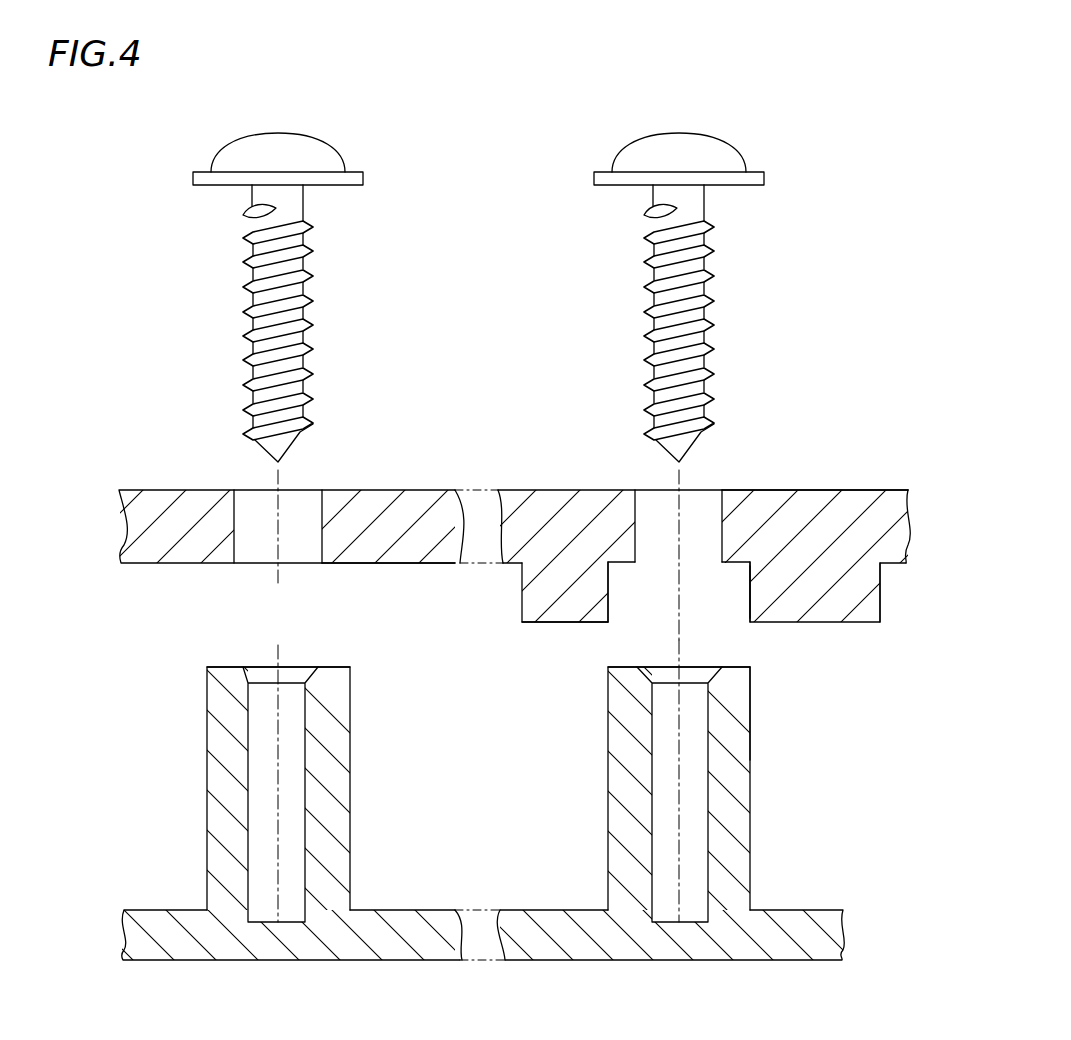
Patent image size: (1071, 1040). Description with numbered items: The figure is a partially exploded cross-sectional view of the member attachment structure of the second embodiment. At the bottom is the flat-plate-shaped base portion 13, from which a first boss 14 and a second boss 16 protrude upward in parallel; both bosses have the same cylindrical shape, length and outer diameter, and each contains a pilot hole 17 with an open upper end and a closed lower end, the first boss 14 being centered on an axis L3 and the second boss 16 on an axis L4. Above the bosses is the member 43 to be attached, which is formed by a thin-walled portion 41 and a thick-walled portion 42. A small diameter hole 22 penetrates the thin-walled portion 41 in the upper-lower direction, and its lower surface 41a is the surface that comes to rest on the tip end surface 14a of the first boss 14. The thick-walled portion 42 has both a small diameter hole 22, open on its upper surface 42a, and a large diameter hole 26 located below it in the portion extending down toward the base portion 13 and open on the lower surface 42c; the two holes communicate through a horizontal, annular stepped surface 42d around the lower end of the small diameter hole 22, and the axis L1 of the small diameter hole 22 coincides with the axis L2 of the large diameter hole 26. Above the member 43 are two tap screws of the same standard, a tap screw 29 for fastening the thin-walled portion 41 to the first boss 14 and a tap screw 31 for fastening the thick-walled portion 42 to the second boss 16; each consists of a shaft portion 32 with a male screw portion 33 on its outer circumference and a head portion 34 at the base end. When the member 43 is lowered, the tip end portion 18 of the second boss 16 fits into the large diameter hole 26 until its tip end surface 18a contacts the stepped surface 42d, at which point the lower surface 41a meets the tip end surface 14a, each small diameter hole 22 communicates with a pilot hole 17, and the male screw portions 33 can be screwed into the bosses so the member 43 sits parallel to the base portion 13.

The base portion 13 is at (513, 963).
The first boss 14 is at (210, 780).
The tip end surface of the first boss 14a is at (207, 667).
The second boss 16 is at (742, 790).
The pilot hole 17 is at (257, 847).
The tip end portion of the second boss 18 is at (748, 680).
The tip end surface of the tip end portion 18a is at (610, 667).
The small diameter hole 22 is at (322, 502).
The large diameter hole 26 is at (745, 608).
The tap screw 29 is at (239, 147).
The tap screw 31 is at (714, 143).
The shaft portion 32 is at (260, 283).
The male screw portion 33 is at (244, 328).
The head portion 34 is at (509, 141).
The thin-walled portion 41 is at (145, 563).
The lower surface of the thin-walled portion 41a is at (357, 563).
The thick-walled portion 42 is at (863, 585).
The upper surface 42a is at (865, 470).
The lower surface 42c is at (545, 623).
The stepped surface 42d is at (749, 585).
The member 43 is at (518, 550).
The axis of the small diameter hole L1 is at (273, 483).
The axis of the large diameter hole L2 is at (675, 483).
The axis of the first boss L3 is at (273, 655).
The axis of the second boss L4 is at (675, 658).